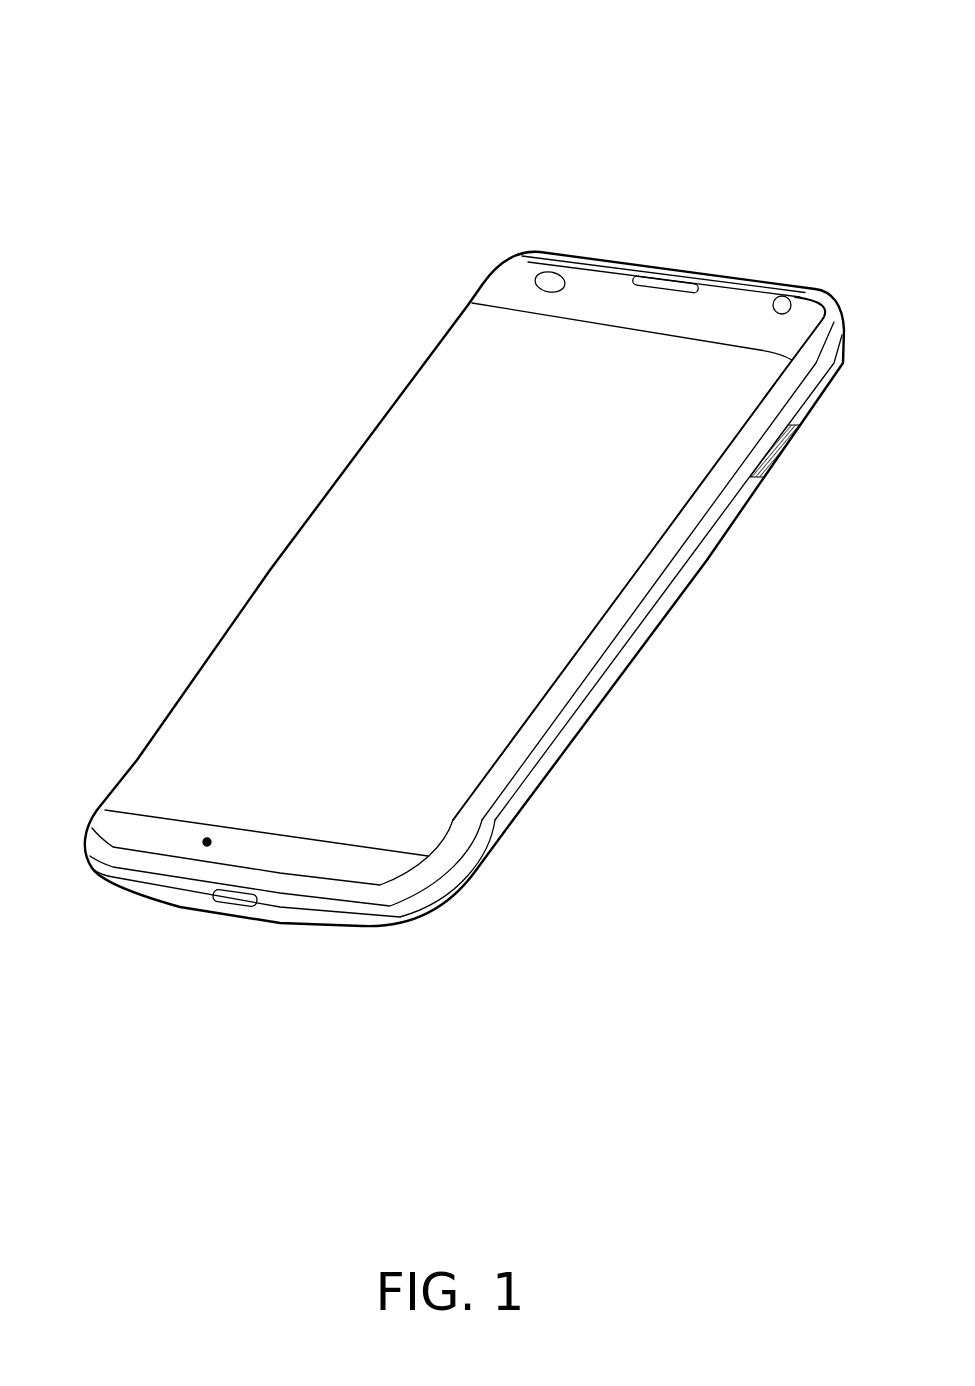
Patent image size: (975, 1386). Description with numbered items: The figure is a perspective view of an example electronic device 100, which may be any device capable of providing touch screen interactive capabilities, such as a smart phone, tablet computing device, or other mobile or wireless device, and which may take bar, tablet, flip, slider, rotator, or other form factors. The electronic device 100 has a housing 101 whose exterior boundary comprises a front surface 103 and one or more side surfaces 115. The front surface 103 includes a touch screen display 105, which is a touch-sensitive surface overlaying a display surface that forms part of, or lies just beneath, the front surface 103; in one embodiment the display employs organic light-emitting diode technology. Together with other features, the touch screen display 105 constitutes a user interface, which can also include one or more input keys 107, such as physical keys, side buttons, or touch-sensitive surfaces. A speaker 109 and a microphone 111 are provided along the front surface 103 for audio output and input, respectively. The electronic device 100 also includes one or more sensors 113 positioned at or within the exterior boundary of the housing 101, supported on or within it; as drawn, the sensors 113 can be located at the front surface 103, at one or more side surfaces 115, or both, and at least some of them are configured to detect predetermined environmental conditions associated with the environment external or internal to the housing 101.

The electronic device 100 is at (86, 42).
The housing 101 is at (738, 277).
The front surface 103 is at (400, 867).
The touch screen display 105 is at (292, 618).
The input key 107 is at (778, 453).
The speaker 109 is at (663, 280).
The microphone 111 is at (205, 843).
The sensor 113 is at (543, 270).
The side surface 115 is at (635, 652).